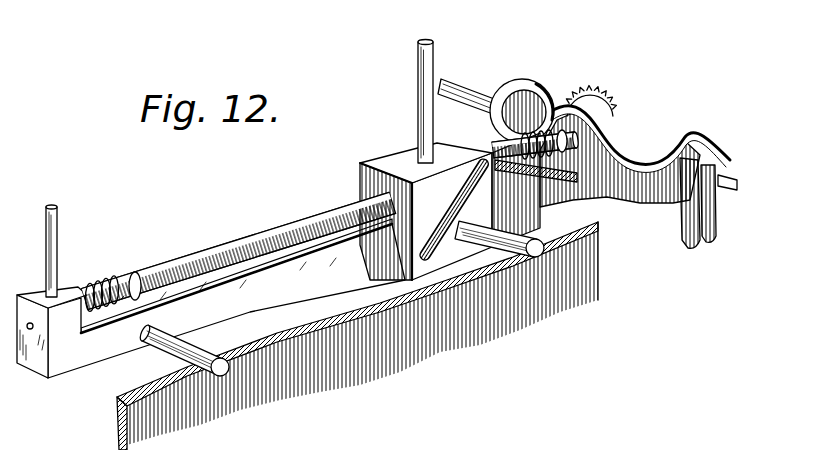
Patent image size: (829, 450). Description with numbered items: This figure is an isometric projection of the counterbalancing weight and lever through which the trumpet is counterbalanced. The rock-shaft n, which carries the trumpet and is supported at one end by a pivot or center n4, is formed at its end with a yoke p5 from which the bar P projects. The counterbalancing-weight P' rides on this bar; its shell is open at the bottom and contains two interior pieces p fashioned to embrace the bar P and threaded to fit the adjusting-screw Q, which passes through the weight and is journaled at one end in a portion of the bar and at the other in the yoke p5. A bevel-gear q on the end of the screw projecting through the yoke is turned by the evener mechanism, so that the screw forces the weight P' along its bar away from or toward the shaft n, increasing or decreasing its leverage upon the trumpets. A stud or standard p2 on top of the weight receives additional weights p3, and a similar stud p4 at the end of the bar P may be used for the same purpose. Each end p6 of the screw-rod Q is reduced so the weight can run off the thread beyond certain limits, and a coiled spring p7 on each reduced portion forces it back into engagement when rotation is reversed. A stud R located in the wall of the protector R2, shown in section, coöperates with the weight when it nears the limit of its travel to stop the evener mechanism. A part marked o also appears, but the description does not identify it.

The bar P is at (211, 298).
The counterbalancing-weight P' is at (440, 206).
The interior pieces p is at (372, 185).
The stud or standard p2 is at (420, 85).
The additional weights p3 is at (450, 187).
The stud p4 is at (58, 242).
The yoke p5 is at (628, 150).
The reduced end of screw-rod p6 is at (100, 284).
The coiled spring p7 is at (128, 279).
The adjusting-screw Q is at (231, 249).
The bevel-gear q is at (601, 98).
The shaft n is at (462, 83).
The pivot or center n4 is at (698, 158).
The slide plate o is at (412, 140).
The stud R is at (216, 380).
The protector R2 is at (357, 336).